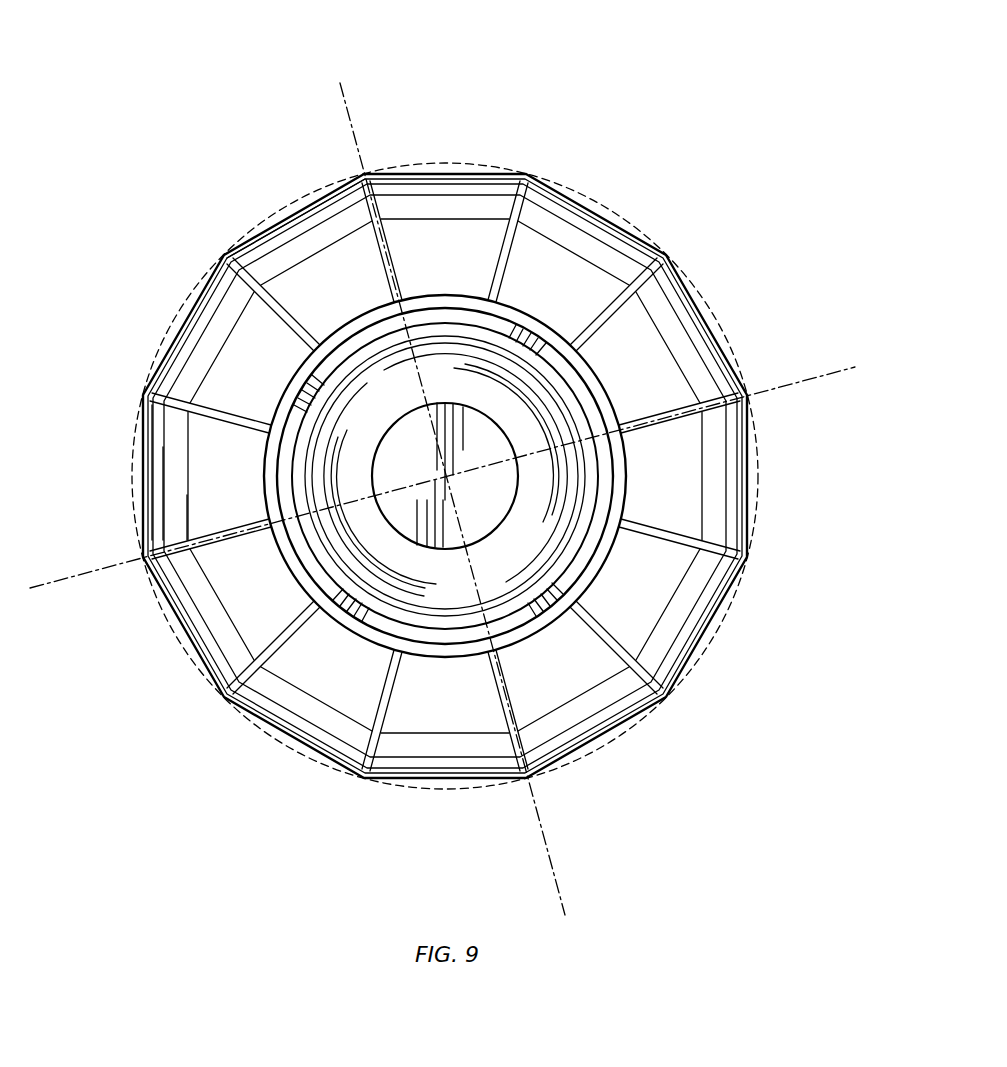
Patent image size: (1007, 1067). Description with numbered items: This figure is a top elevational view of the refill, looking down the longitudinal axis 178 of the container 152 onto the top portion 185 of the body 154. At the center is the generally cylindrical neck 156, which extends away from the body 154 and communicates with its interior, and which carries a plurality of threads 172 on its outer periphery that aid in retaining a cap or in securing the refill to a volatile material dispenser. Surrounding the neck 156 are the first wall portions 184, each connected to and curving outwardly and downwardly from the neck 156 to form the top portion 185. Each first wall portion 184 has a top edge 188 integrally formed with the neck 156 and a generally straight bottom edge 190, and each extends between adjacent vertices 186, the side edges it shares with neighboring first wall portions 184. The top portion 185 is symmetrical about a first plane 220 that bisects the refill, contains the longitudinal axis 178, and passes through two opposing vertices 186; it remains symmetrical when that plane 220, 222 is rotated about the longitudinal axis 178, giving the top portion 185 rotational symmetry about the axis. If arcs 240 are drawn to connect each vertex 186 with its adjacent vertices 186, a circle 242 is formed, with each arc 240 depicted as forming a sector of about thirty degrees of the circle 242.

The container 152 is at (170, 122).
The body 154 is at (717, 620).
The neck 156 is at (540, 345).
The threads 172 is at (510, 640).
The longitudinal axis 178 is at (450, 478).
The first wall portion 184 is at (428, 190).
The top portion 185 is at (521, 85).
The vertex 186 is at (375, 182).
The top edge 188 is at (337, 320).
The bottom edge 190 is at (498, 172).
The first plane 220 is at (343, 88).
The plane 222 is at (852, 364).
The arc 240 is at (462, 163).
The circle 242 is at (330, 183).